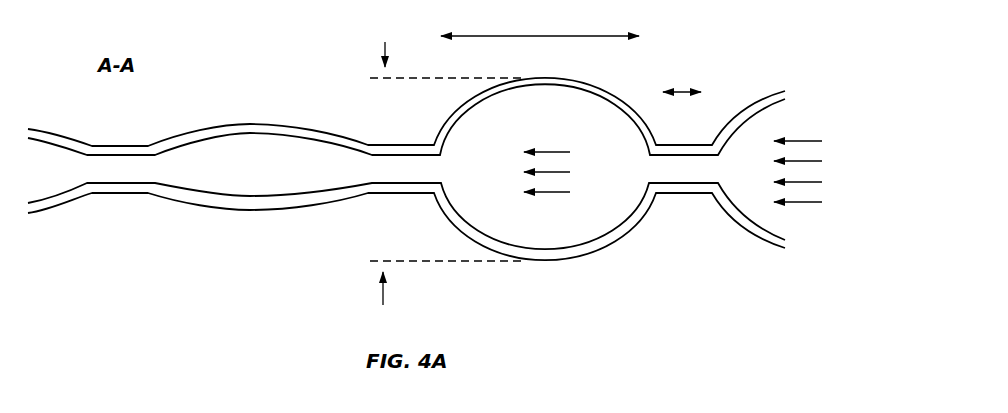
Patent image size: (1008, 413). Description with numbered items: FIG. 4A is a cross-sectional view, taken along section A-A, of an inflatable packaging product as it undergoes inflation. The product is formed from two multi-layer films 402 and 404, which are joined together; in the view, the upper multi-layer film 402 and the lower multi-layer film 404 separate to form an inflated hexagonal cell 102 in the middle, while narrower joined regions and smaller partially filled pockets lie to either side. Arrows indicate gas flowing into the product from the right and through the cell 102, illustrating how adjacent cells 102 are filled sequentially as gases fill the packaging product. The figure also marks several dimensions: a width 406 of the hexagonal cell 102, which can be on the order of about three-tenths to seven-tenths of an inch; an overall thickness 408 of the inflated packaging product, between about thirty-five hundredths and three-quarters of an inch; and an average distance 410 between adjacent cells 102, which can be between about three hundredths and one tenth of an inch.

The hexagonal cell 102 is at (545, 169).
The multi-layer film 402 is at (277, 123).
The multi-layer film 404 is at (278, 213).
The width 406 is at (540, 26).
The overall thickness 408 is at (435, 173).
The average distance 410 is at (682, 79).